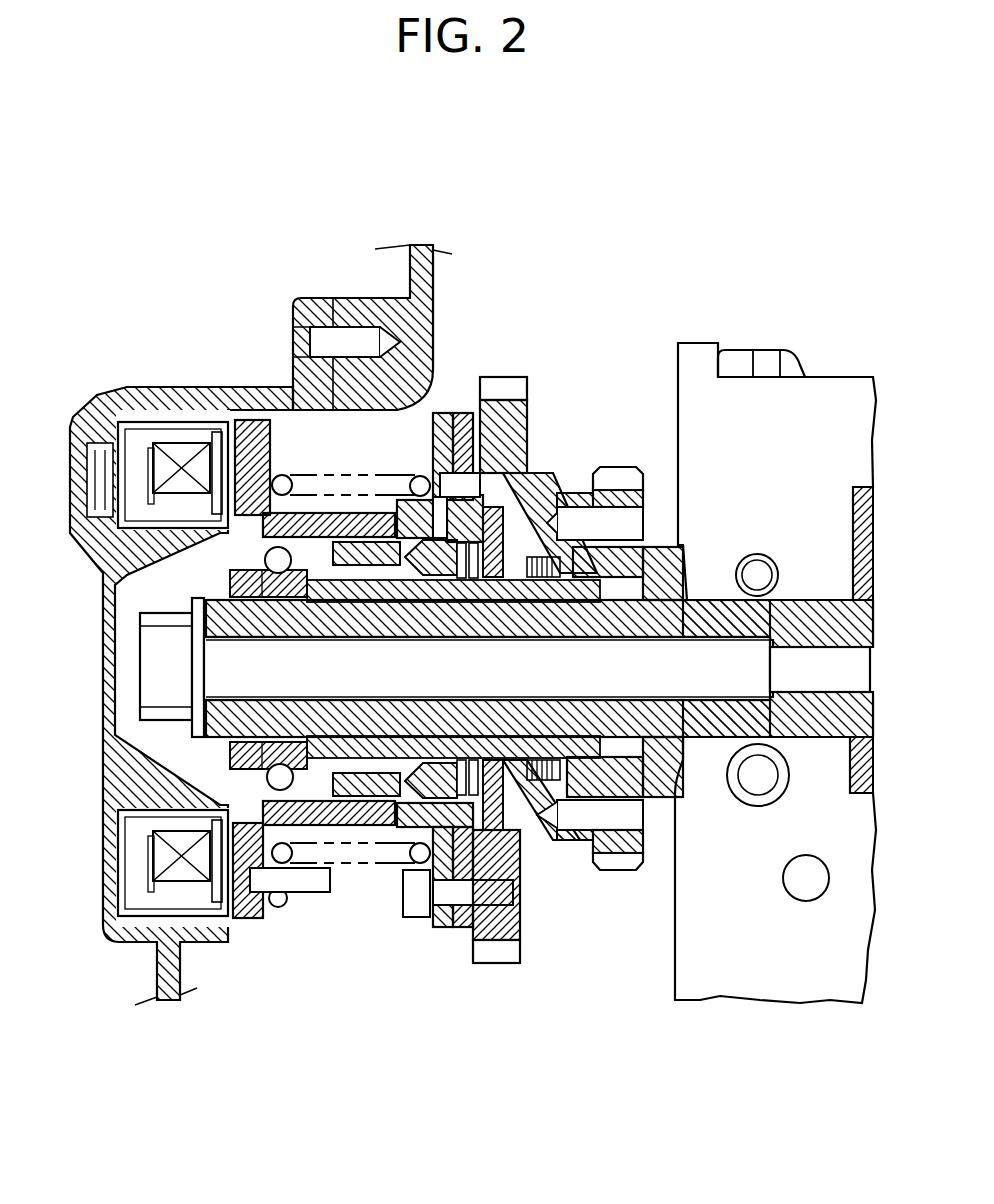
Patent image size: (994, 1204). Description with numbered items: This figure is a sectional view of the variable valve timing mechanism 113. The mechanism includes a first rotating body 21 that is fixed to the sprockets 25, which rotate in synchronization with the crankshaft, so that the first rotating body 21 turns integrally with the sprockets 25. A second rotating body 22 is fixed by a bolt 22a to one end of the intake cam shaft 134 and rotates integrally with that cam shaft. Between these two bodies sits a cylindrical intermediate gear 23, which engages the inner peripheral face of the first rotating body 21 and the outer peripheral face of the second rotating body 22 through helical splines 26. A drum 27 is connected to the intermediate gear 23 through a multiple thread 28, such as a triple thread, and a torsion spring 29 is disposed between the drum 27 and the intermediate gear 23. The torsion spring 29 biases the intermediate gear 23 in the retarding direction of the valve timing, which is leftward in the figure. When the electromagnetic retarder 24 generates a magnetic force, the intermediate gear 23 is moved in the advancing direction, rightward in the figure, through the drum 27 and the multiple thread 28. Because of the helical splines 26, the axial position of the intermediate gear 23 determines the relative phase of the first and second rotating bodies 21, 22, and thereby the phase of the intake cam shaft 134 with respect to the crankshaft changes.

The first rotating body 21 is at (443, 413).
The second rotating body 22 is at (622, 562).
The bolt 22a is at (103, 735).
The intermediate gear 23 is at (377, 537).
The electromagnetic retarder 24 is at (183, 463).
The sprockets 25 is at (617, 467).
The helical splines 26 is at (430, 562).
The drum 27 is at (255, 465).
The multiple thread 28 is at (327, 513).
The torsion spring 29 is at (305, 472).
The variable valve timing mechanism 113 is at (364, 935).
The intake cam shaft 134 is at (690, 600).